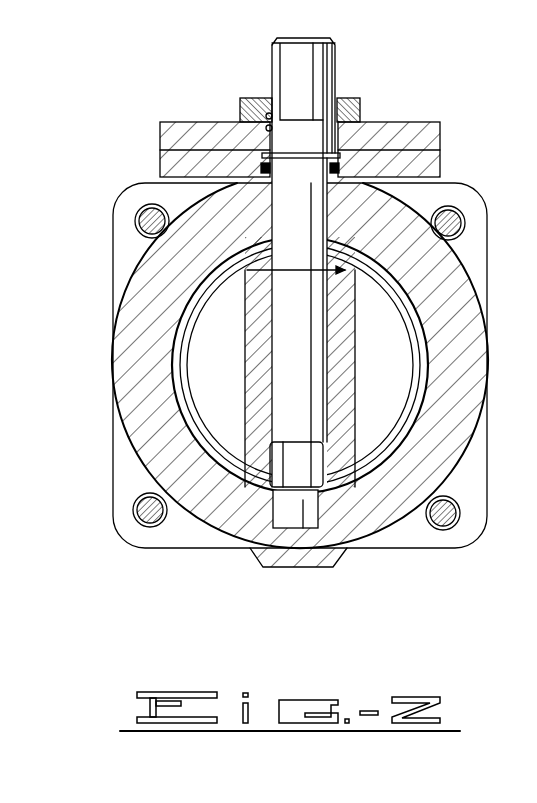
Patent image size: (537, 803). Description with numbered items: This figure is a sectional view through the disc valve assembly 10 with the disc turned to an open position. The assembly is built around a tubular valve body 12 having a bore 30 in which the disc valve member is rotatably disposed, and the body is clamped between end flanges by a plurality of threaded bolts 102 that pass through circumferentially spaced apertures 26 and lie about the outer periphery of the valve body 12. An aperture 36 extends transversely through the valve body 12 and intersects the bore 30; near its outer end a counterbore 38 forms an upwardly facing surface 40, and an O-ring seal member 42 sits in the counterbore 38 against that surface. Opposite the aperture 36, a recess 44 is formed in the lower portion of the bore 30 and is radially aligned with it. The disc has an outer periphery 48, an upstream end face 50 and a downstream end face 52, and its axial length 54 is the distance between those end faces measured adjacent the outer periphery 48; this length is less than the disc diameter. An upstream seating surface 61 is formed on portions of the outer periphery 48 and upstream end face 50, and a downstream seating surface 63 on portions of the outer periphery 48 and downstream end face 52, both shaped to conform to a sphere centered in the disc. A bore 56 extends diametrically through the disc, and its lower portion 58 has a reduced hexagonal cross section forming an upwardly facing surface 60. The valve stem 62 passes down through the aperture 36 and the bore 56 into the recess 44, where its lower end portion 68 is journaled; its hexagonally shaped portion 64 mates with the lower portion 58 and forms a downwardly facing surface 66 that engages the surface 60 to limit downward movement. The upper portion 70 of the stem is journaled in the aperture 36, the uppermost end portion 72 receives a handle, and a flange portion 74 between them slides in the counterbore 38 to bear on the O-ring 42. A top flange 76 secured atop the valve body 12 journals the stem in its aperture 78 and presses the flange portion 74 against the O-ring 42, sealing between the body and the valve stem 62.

The disc valve assembly 10 is at (357, 67).
The valve body 12 is at (252, 560).
The apertures 26 is at (140, 214).
The bore 30 is at (218, 472).
The aperture 36 is at (280, 210).
The counterbore 38 is at (267, 132).
The upwardly facing surface 40 is at (345, 165).
The O-ring seal member 42 is at (262, 168).
The recess 44 is at (288, 528).
The outer periphery 48 is at (342, 252).
The upstream end face 50 is at (245, 325).
The downstream end face 52 is at (352, 357).
The axial length 54 is at (280, 266).
The bore 56 is at (286, 343).
The lower portion 58 is at (280, 442).
The upwardly facing surface 60 is at (327, 433).
The upstream seating surface 61 is at (263, 247).
The valve stem 62 is at (310, 330).
The downstream seating surface 63 is at (362, 235).
The hexagonally shaped portion 64 is at (303, 465).
The downwardly facing surface 66 is at (274, 496).
The lower end portion 68 is at (321, 540).
The upper portion 70 is at (303, 223).
The uppermost end portion 72 is at (313, 54).
The flange portion 74 is at (304, 138).
The top flange 76 is at (172, 134).
The aperture 78 is at (243, 115).
The threaded bolts 102 is at (137, 228).